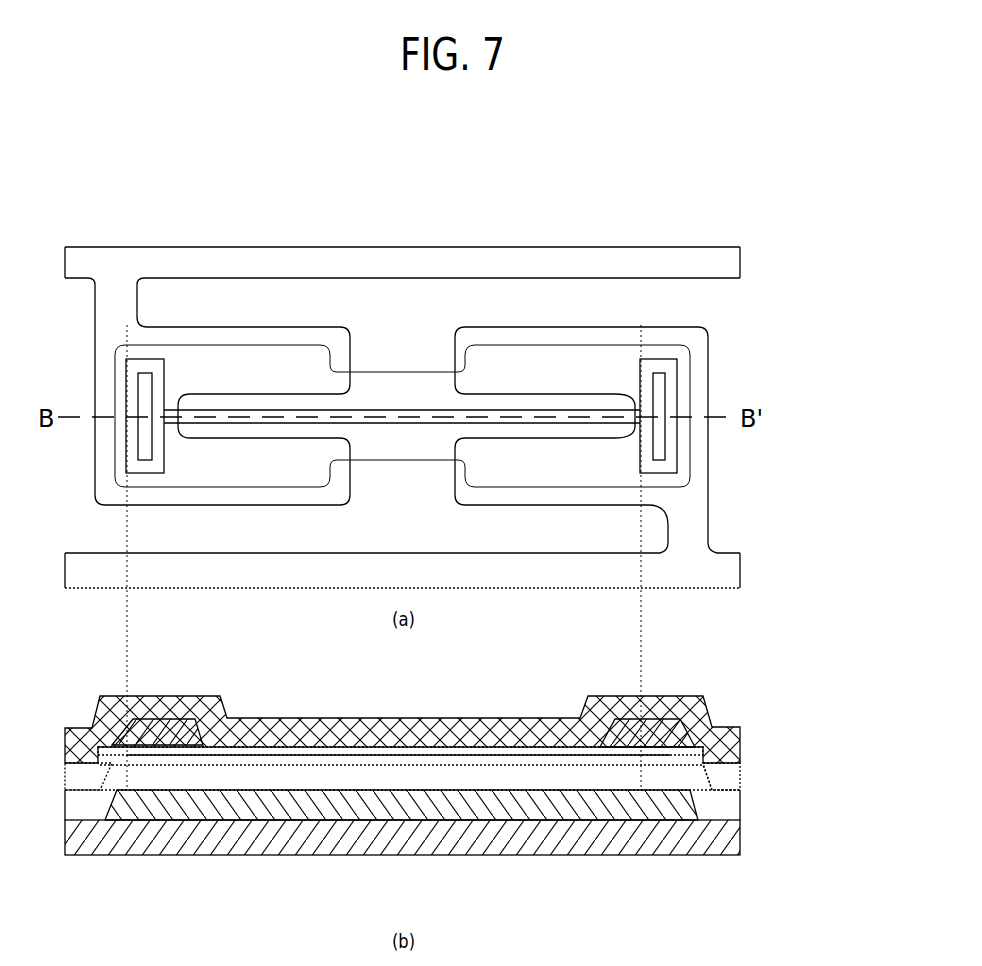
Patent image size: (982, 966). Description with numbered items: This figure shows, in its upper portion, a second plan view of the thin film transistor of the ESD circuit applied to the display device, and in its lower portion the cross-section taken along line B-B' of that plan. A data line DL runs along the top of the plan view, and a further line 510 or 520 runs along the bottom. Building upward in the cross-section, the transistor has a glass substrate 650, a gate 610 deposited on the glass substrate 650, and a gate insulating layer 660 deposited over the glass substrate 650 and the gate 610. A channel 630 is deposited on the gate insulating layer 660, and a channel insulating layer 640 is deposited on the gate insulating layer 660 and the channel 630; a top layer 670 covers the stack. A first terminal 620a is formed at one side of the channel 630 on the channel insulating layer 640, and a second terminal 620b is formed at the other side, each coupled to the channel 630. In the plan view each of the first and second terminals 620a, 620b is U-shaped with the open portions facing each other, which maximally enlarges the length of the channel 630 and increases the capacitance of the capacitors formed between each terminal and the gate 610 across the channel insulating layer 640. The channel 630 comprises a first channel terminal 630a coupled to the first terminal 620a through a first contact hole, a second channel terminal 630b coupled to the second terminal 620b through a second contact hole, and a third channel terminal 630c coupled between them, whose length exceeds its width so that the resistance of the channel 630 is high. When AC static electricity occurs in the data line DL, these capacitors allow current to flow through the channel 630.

The data line DL is at (688, 258).
The gate line 510 is at (464, 572).
The gate line 520 is at (730, 583).
The gate 610 is at (298, 345).
The first terminal 620a is at (256, 309).
The second terminal 620b is at (520, 327).
The channel 630 is at (352, 758).
The first channel terminal 630a is at (147, 359).
The second channel terminal 630b is at (660, 359).
The third channel terminal 630c is at (398, 410).
The channel insulating layer 640 is at (450, 753).
The glass substrate 650 is at (735, 845).
The gate insulating layer 660 is at (735, 807).
The passivation layer 670 is at (740, 742).